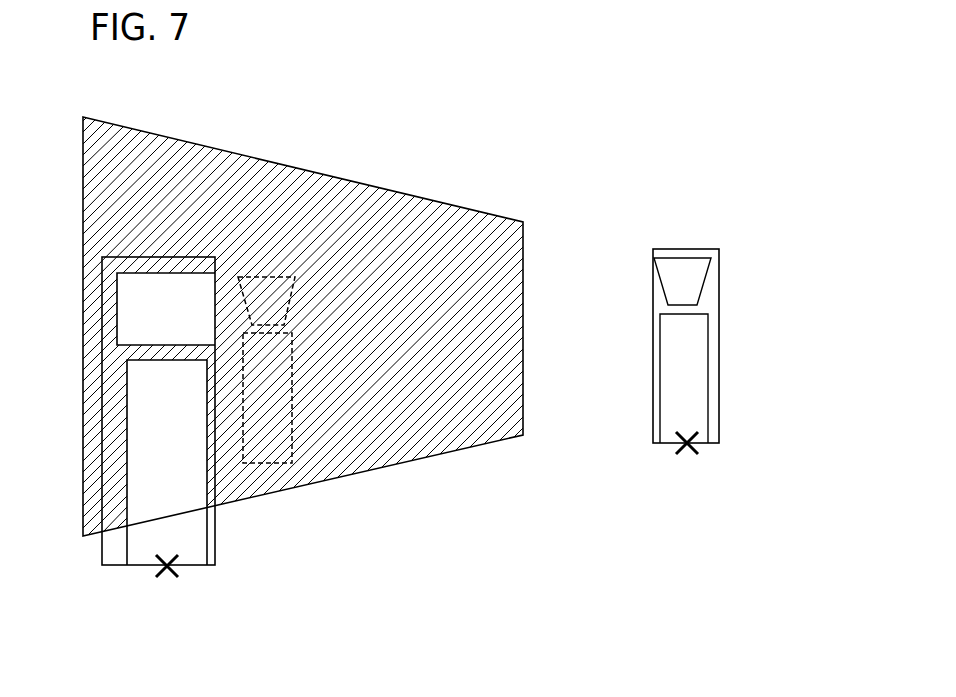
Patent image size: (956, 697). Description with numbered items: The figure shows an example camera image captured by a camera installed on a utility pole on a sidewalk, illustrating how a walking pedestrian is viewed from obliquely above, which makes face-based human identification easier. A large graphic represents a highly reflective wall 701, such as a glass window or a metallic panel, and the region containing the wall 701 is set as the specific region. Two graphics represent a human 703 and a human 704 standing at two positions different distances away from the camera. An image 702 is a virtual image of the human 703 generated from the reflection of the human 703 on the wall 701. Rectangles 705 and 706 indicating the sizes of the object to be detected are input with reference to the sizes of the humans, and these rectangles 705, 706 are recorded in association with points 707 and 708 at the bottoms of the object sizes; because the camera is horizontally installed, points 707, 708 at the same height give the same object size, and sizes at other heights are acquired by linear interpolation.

The highly reflective wall 701 is at (229, 146).
The virtual image 702 is at (268, 270).
The human 703 is at (692, 395).
The human 704 is at (184, 522).
The rectangle 705 is at (728, 428).
The rectangle 706 is at (224, 556).
The point 707 is at (689, 460).
The point 708 is at (165, 582).